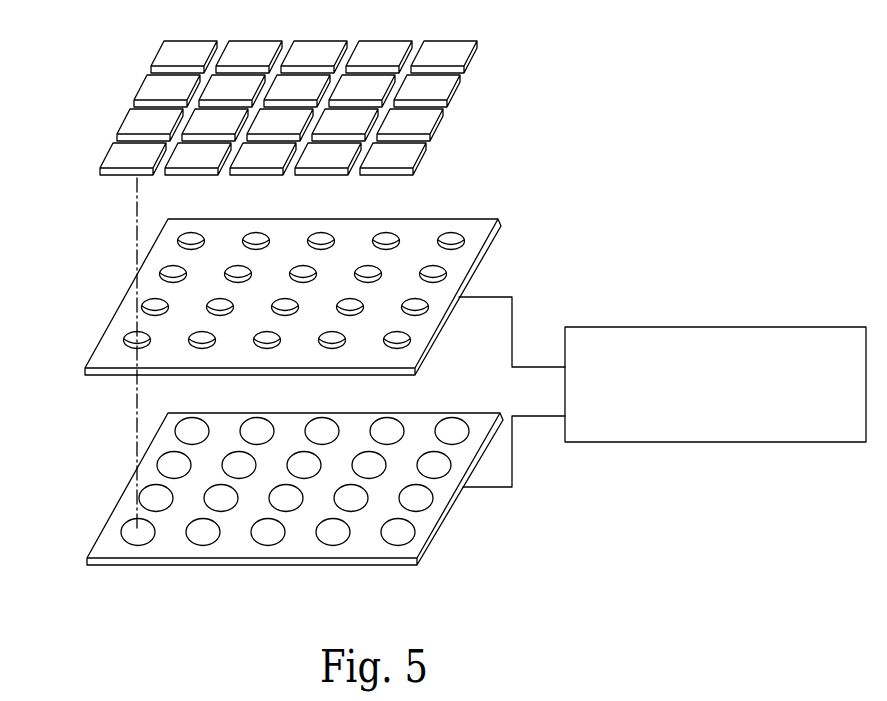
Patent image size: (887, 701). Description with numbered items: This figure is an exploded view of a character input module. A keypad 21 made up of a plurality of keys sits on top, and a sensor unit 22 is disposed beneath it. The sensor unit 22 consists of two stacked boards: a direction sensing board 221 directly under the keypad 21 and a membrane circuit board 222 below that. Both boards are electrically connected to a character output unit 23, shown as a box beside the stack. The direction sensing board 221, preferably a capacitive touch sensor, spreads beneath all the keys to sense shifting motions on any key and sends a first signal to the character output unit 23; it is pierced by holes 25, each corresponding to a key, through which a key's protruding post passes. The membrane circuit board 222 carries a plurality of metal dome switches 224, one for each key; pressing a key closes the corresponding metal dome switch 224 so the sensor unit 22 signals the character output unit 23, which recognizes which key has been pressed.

The keypad 21 is at (137, 118).
The sensor unit 22 is at (74, 357).
The direction sensing board 221 is at (312, 265).
The membrane circuit board 222 is at (317, 513).
The metal dome switch 224 is at (203, 527).
The hole 25 is at (127, 340).
The character output unit 23 is at (722, 327).